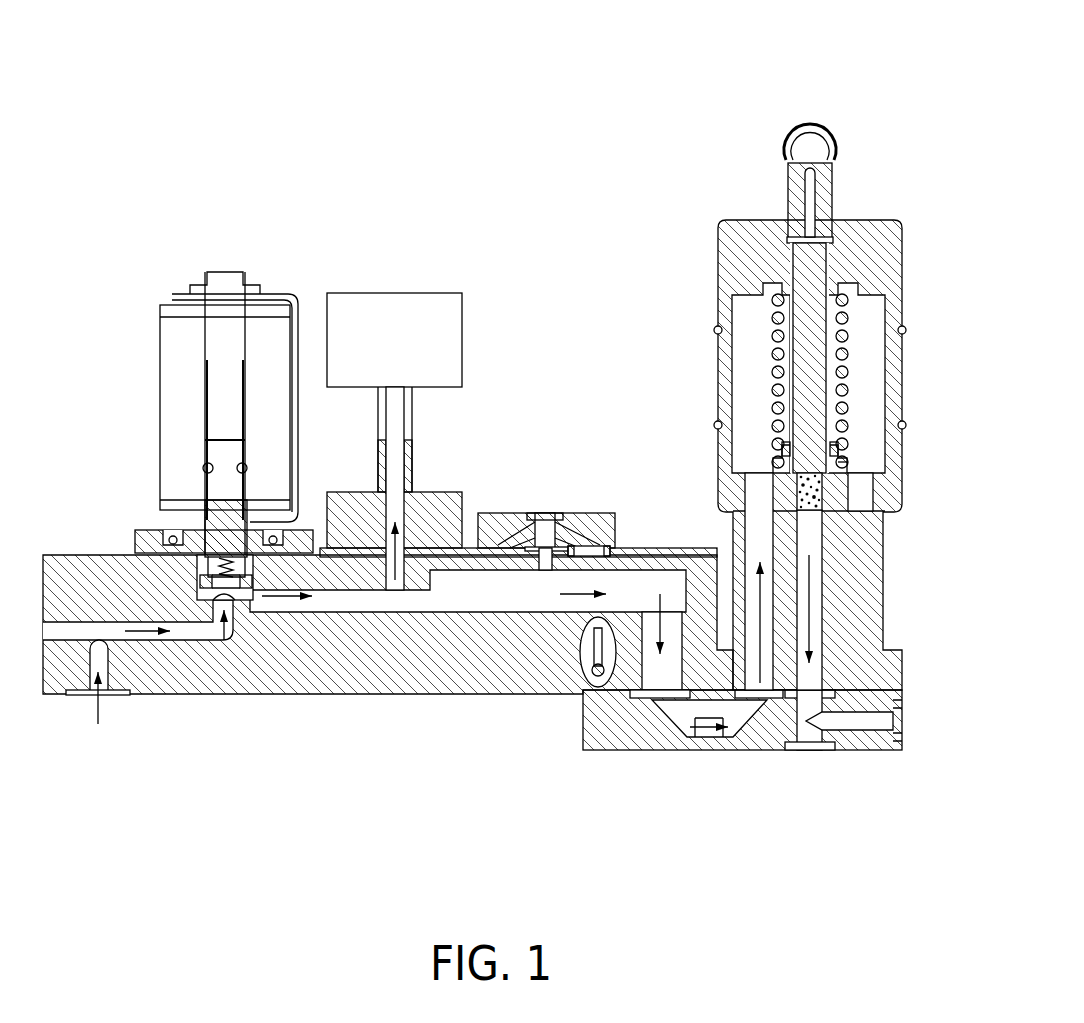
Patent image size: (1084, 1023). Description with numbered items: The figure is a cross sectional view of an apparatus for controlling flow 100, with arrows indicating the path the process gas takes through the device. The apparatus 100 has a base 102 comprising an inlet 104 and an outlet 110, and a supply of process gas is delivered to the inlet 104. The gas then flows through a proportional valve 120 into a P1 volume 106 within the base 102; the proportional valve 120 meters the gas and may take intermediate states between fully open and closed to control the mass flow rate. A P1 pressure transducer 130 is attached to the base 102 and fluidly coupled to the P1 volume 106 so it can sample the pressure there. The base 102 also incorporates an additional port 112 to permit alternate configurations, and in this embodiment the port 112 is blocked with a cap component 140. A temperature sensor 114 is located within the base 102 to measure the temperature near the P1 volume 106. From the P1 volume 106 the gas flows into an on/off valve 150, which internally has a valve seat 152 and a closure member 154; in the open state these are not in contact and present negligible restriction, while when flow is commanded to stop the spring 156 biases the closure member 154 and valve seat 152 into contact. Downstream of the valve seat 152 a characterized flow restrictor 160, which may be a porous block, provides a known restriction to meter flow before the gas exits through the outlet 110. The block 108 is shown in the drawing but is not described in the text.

The apparatus for controlling flow 100 is at (320, 86).
The base 102 is at (103, 555).
The inlet 104 is at (88, 710).
The P1 volume 106 is at (530, 606).
The manifold block 108 is at (660, 750).
The outlet 110 is at (812, 752).
The port 112 is at (605, 548).
The temperature sensor 114 is at (598, 690).
The proportional valve 120 is at (163, 298).
The P1 pressure transducer 130 is at (395, 293).
The cap component 140 is at (580, 514).
The on/off valve 150 is at (748, 222).
The valve seat 152 is at (848, 464).
The closure member 154 is at (838, 446).
The spring 156 is at (850, 360).
The characterized flow restrictor 160 is at (814, 490).